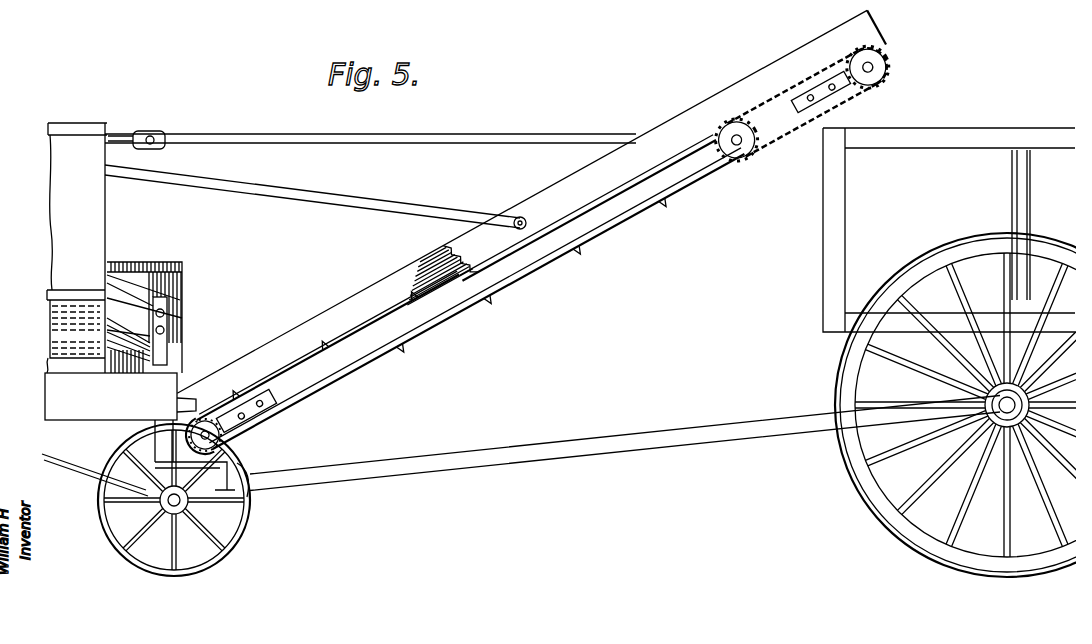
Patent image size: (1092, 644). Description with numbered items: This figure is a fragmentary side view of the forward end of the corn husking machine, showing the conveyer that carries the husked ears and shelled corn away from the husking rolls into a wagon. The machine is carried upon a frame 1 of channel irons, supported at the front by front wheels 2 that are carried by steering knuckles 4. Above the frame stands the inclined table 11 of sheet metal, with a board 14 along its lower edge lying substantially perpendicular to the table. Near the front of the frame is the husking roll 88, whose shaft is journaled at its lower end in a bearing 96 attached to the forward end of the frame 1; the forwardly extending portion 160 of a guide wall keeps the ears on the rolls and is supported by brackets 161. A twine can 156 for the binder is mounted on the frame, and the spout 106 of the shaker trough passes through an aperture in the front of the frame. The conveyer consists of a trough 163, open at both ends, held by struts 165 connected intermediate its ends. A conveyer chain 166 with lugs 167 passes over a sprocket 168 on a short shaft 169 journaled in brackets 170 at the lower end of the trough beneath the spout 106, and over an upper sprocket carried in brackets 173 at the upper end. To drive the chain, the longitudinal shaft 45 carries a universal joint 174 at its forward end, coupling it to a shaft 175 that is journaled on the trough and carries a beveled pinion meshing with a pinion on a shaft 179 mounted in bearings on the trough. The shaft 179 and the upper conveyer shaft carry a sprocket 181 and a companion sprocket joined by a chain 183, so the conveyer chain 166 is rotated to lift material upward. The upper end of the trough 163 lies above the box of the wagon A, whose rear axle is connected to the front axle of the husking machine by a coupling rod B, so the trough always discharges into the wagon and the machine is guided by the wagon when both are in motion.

The frame 1 is at (111, 396).
The front wheels 2 is at (252, 530).
The steering knuckles 4 is at (196, 470).
The inclined table 11 is at (77, 248).
The board 14 is at (76, 331).
The longitudinal shaft 45 is at (115, 134).
The husking roll 88 is at (140, 350).
The bearing 96 is at (176, 345).
The spout 106 is at (180, 405).
The twine can 156 is at (152, 262).
The forwardly extending portion 160 is at (168, 292).
The brackets 161 is at (178, 358).
The trough 163 is at (553, 190).
The struts 165 is at (330, 199).
The conveyer chain 166 is at (450, 320).
The lugs 167 is at (577, 258).
The sprocket 168 is at (212, 418).
The short shaft 169 is at (232, 441).
The brackets 170 is at (278, 418).
The brackets 173 is at (820, 58).
The universal joint 174 is at (162, 131).
The shaft 175 is at (420, 134).
The shaft 179 is at (738, 150).
The sprocket 181 is at (890, 65).
The chain 183 is at (770, 92).
The wagon A is at (936, 352).
The coupling rod B is at (672, 436).